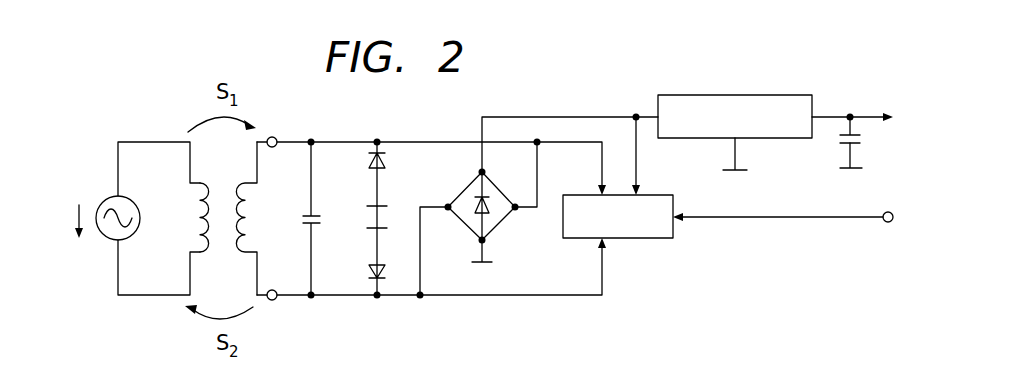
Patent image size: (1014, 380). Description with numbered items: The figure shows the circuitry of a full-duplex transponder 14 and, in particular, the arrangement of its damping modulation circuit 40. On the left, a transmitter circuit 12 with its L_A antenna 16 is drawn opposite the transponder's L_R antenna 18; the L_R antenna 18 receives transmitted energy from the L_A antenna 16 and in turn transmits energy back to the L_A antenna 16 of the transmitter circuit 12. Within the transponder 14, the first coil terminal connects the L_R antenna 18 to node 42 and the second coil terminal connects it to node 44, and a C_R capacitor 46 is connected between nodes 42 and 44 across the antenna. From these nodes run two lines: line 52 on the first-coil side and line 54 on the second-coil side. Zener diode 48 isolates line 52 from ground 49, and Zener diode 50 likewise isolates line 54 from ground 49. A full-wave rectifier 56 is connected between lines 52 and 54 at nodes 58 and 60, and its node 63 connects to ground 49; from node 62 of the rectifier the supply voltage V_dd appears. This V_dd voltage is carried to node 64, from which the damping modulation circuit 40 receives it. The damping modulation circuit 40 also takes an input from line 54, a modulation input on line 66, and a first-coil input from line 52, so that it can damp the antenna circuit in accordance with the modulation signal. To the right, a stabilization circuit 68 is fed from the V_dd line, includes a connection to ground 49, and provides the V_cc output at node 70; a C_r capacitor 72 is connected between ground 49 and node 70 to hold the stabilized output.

The transmitter circuit 12 is at (140, 178).
The full-duplex transponder 14 is at (573, 67).
The L_A antenna 16 is at (205, 252).
The L_R antenna 18 is at (245, 183).
The damping modulation circuit 40 is at (634, 240).
The node 42 is at (311, 141).
The node 44 is at (311, 296).
The C_R capacitor 46 is at (306, 224).
The Zener diode 48 is at (369, 159).
The ground 49 is at (384, 217).
The Zener diode 50 is at (370, 274).
The line 52 is at (377, 141).
The line 54 is at (398, 296).
The full-wave rectifier 56 is at (465, 226).
The node 58 is at (420, 296).
The node 60 is at (537, 142).
The node 62 is at (480, 172).
The node 63 is at (485, 241).
The node 64 is at (636, 116).
The line 66 is at (828, 219).
The stabilization circuit 68 is at (734, 95).
The node 70 is at (850, 116).
The C_r capacitor 72 is at (840, 141).